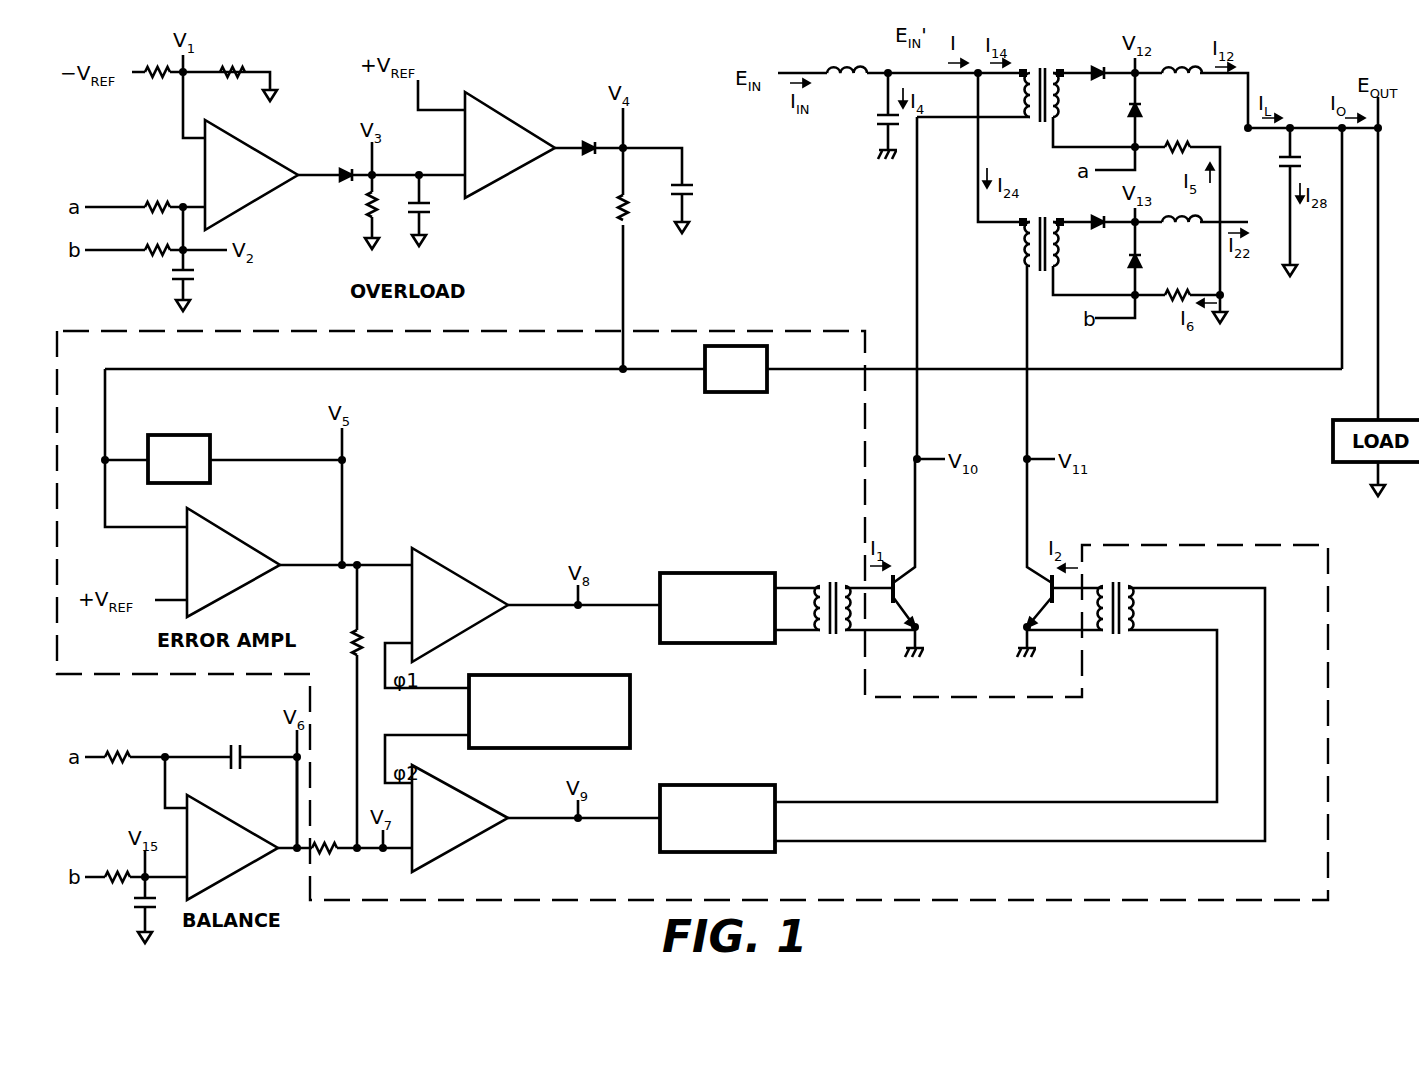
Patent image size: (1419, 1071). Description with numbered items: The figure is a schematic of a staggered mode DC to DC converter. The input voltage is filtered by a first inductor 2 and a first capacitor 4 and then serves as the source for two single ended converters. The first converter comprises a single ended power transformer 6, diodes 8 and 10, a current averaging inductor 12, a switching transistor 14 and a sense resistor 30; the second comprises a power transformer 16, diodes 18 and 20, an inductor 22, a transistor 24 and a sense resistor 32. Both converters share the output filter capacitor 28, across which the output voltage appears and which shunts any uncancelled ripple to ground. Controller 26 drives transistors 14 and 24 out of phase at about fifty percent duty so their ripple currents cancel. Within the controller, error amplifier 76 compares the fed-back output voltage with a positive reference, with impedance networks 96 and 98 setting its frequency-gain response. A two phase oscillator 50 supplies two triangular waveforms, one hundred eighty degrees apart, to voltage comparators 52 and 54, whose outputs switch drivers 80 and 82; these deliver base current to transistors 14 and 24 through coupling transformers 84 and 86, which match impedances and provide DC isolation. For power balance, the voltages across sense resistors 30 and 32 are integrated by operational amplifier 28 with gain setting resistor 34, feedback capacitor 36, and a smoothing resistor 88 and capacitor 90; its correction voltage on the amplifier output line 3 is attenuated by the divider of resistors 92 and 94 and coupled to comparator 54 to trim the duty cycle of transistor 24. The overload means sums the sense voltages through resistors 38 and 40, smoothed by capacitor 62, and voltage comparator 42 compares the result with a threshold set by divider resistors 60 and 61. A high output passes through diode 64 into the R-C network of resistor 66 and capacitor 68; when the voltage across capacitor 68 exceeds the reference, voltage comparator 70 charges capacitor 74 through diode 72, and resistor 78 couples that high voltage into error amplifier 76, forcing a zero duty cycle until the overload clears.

The first inductor 2 is at (840, 67).
The connection line 3 is at (295, 796).
The first capacitor 4 is at (315, 174).
The single ended power transformer 6 is at (1039, 70).
The diode 8 is at (1098, 79).
The diode 10 is at (1130, 111).
The inductor 12 is at (1190, 76).
The transistor 14 is at (903, 582).
The single ended power transformer 16 is at (1027, 246).
The diode 18 is at (1098, 227).
The diode 20 is at (1132, 262).
The inductor 22 is at (1193, 226).
The transistor 24 is at (1032, 600).
The controller 26 is at (1330, 676).
The output filter capacitor 28 is at (1283, 163).
The resistor 30 is at (1175, 144).
The resistor 32 is at (1175, 303).
The gain setting resistor 34 is at (119, 752).
The feedback capacitor 36 is at (232, 745).
The resistor 38 is at (155, 204).
The resistor 40 is at (158, 253).
The voltage comparator 42 is at (217, 144).
The two phase oscillator 50 is at (630, 700).
The voltage comparator 52 is at (446, 560).
The voltage comparator 54 is at (470, 837).
The resistor 60 is at (150, 77).
The resistor 61 is at (230, 68).
The capacitor 62 is at (195, 277).
The diode 64 is at (342, 180).
The resistor 66 is at (368, 208).
The capacitor 68 is at (425, 213).
The voltage comparator 70 is at (503, 101).
The diode 72 is at (590, 152).
The capacitor 74 is at (693, 190).
The error amplifier 76 is at (232, 532).
The resistor 78 is at (618, 215).
The driver 80 is at (690, 573).
The driver 82 is at (780, 785).
The transformer 84 is at (830, 584).
The transformer 86 is at (1115, 640).
The resistor 88 is at (110, 875).
The capacitor 90 is at (134, 904).
The resistor 92 is at (325, 854).
The resistor 94 is at (355, 660).
The impedance network 96 is at (700, 395).
The impedance network 98 is at (177, 435).